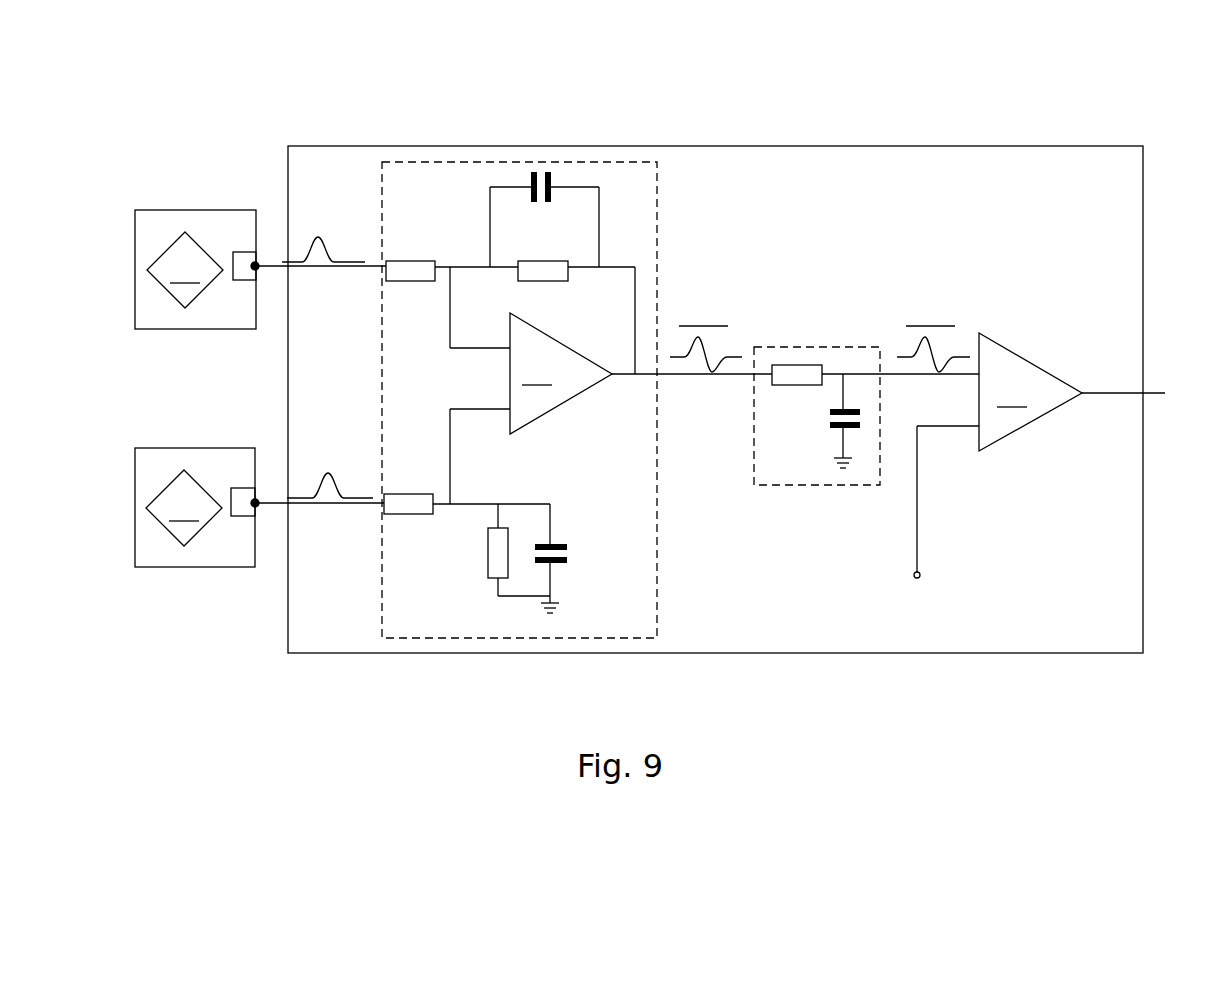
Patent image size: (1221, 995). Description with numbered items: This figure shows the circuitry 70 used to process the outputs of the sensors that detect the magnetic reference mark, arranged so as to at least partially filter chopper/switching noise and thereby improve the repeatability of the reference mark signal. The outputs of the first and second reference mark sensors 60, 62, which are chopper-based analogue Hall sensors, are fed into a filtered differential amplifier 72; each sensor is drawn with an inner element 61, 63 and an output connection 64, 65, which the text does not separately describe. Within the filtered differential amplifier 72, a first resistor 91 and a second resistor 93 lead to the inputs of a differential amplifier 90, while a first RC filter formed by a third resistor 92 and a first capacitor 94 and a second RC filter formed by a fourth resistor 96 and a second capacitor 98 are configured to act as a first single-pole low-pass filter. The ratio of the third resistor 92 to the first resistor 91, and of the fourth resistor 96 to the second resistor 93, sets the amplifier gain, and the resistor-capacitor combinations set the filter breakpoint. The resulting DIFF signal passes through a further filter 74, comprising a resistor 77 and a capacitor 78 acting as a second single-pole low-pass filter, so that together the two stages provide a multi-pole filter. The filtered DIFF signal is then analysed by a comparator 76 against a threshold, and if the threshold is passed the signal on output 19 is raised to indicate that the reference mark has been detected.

The output 19 is at (1153, 395).
The first reference mark sensor 60 is at (200, 219).
The first sensor 61 is at (185, 270).
The second reference mark sensor 62 is at (200, 537).
The second sensor 63 is at (184, 508).
The first detector output 64 is at (243, 252).
The second detector output 65 is at (243, 488).
The circuitry 70 is at (731, 344).
The filtered differential amplifier 72 is at (519, 346).
The filter 74 is at (843, 381).
The comparator 76 is at (1030, 392).
The resistor 77 is at (785, 387).
The capacitor 78 is at (820, 438).
The differential amplifier 90 is at (561, 373).
The first resistor 91 is at (410, 259).
The third resistor 92 is at (545, 260).
The second resistor 93 is at (405, 494).
The first capacitor 94 is at (525, 198).
The fourth resistor 96 is at (487, 557).
The second capacitor 98 is at (575, 537).